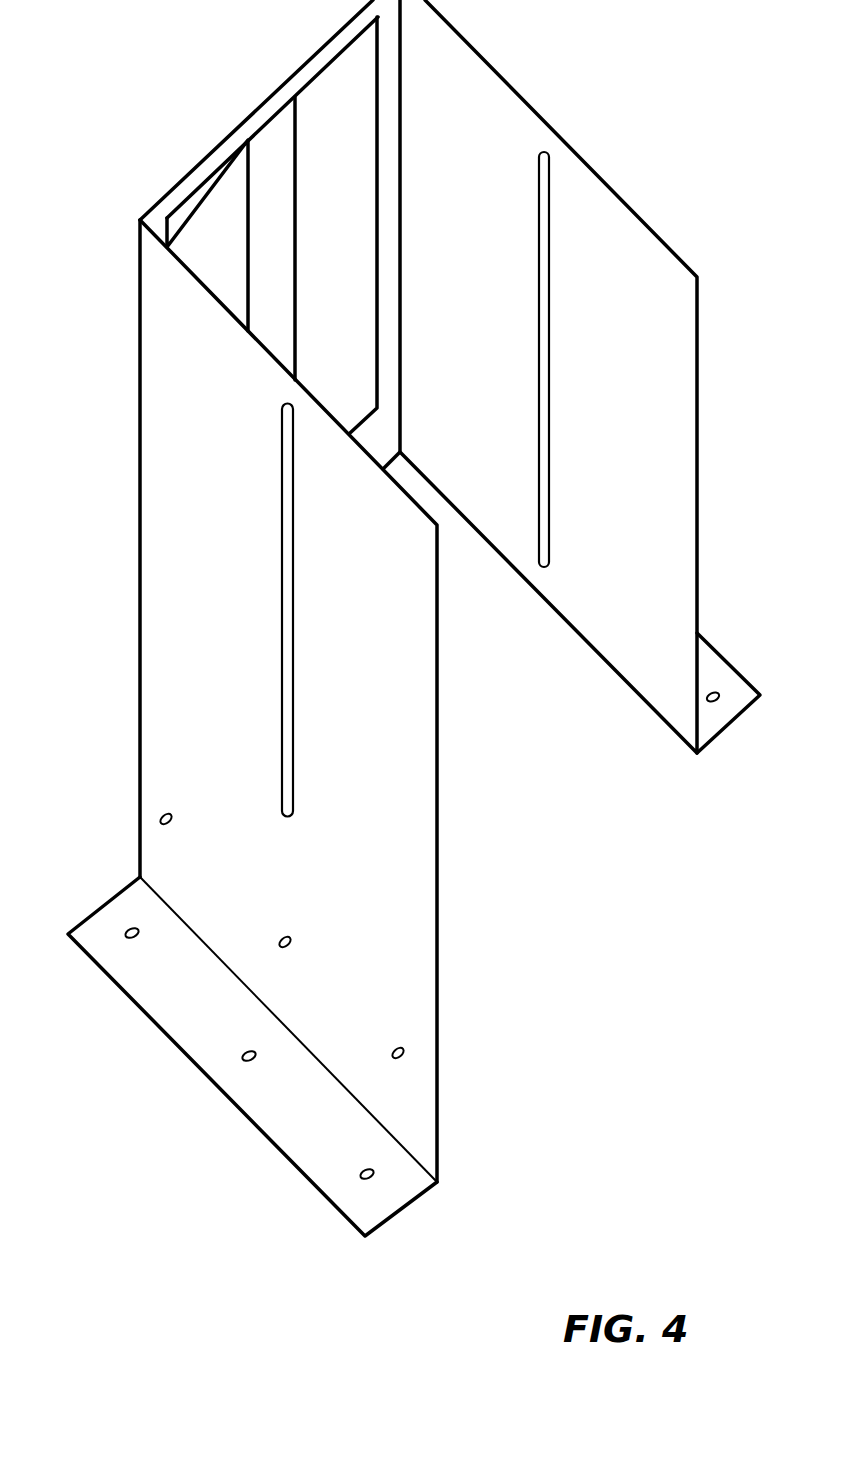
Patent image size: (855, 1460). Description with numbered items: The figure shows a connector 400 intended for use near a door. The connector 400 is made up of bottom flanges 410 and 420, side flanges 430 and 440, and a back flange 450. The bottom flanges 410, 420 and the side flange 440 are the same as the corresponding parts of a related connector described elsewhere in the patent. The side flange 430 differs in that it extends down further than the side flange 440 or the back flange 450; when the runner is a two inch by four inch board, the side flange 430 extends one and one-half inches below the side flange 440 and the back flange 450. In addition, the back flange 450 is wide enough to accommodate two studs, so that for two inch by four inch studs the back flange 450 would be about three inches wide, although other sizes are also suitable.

The connector 400 is at (420, 651).
The bottom flange 410 is at (723, 670).
The bottom flange 420 is at (193, 1025).
The side flange 430 is at (168, 509).
The side flange 440 is at (617, 647).
The back flange 450 is at (269, 124).